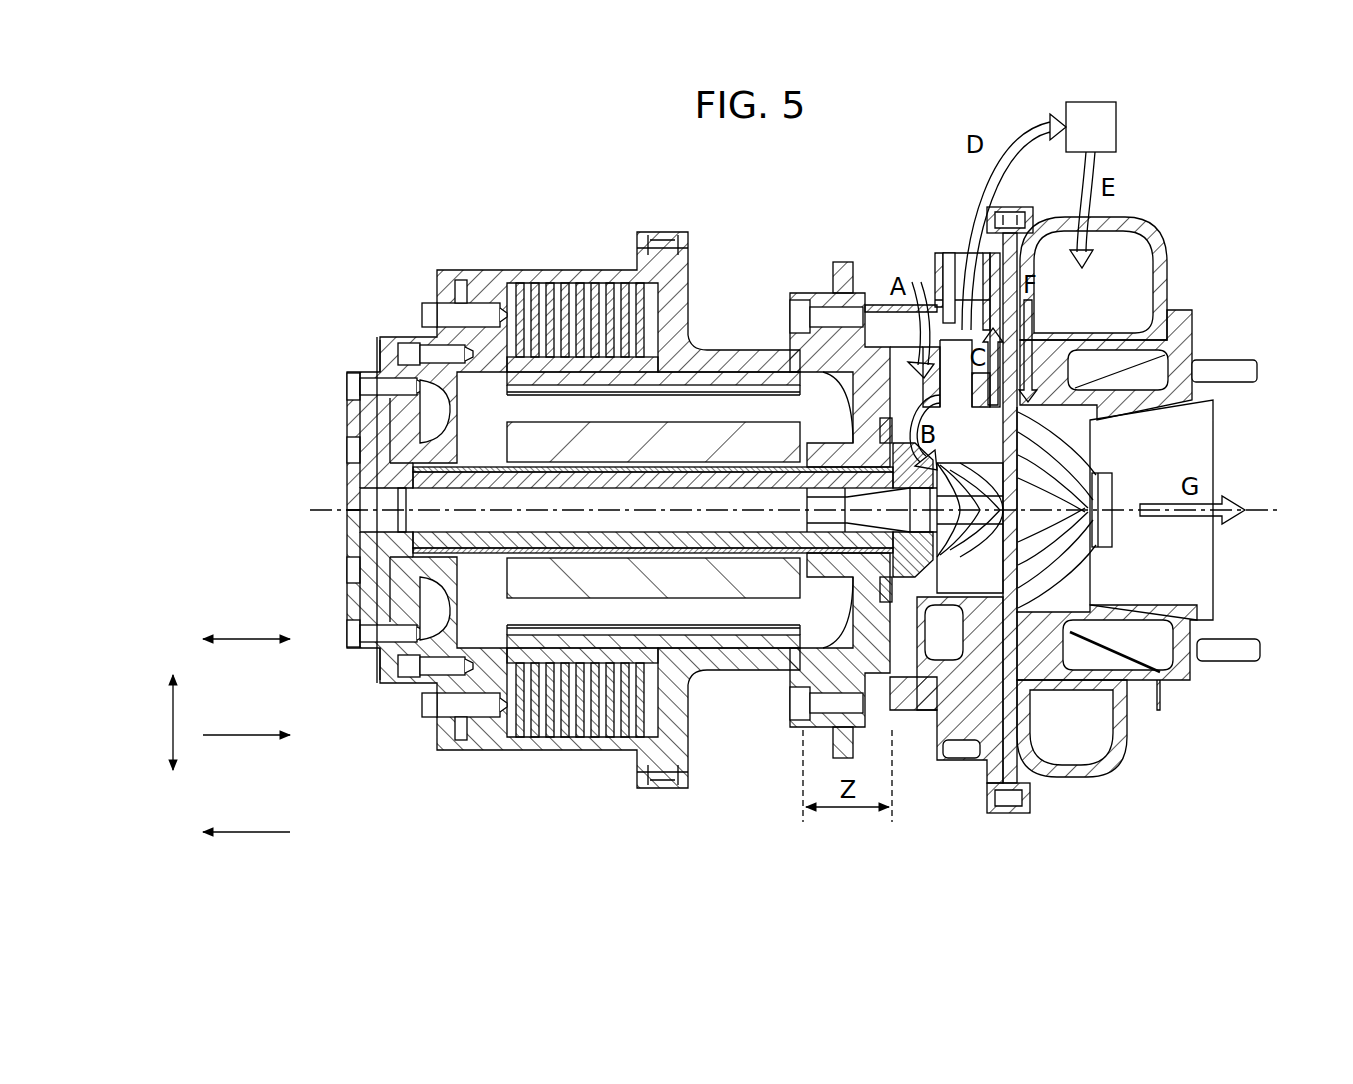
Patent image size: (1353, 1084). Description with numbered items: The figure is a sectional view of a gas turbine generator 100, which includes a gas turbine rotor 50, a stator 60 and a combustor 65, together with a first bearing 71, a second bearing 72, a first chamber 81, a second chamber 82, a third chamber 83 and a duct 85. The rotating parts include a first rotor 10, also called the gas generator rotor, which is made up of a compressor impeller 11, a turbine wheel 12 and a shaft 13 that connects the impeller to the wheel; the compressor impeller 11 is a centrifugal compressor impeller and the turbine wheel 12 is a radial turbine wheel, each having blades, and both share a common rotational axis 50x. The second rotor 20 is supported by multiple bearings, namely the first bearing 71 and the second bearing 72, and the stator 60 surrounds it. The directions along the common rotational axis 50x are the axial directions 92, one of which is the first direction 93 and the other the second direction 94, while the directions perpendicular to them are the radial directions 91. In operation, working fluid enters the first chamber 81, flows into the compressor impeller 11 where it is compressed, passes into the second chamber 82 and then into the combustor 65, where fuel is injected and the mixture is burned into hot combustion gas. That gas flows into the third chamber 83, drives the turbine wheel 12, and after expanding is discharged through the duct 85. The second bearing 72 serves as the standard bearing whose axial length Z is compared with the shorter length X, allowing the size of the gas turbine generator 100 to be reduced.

The gas turbine generator 100 is at (518, 200).
The first rotor 10 is at (942, 540).
The compressor impeller 11 is at (990, 560).
The turbine wheel 12 is at (1063, 548).
The shaft 13 is at (877, 495).
The second rotor 20 is at (700, 548).
The gas turbine rotor 50 is at (797, 868).
The common rotational axis 50x is at (730, 505).
The stator 60 is at (568, 430).
The combustor 65 is at (1116, 122).
The first bearing 71 is at (442, 377).
The second bearing 72 is at (870, 357).
The first chamber 81 is at (910, 357).
The second chamber 82 is at (949, 253).
The third chamber 83 is at (1128, 262).
The duct 85 is at (1170, 577).
The radial directions 91 is at (173, 718).
The axial directions 92 is at (251, 637).
The first direction 93 is at (251, 733).
The second direction 94 is at (251, 830).